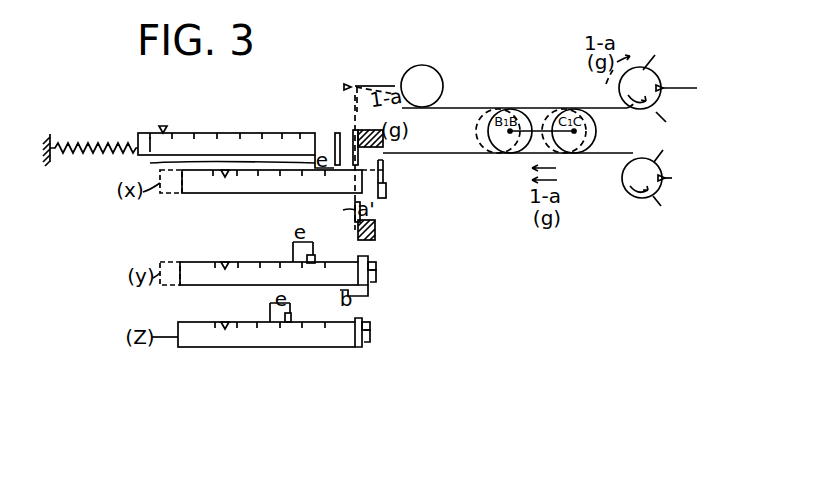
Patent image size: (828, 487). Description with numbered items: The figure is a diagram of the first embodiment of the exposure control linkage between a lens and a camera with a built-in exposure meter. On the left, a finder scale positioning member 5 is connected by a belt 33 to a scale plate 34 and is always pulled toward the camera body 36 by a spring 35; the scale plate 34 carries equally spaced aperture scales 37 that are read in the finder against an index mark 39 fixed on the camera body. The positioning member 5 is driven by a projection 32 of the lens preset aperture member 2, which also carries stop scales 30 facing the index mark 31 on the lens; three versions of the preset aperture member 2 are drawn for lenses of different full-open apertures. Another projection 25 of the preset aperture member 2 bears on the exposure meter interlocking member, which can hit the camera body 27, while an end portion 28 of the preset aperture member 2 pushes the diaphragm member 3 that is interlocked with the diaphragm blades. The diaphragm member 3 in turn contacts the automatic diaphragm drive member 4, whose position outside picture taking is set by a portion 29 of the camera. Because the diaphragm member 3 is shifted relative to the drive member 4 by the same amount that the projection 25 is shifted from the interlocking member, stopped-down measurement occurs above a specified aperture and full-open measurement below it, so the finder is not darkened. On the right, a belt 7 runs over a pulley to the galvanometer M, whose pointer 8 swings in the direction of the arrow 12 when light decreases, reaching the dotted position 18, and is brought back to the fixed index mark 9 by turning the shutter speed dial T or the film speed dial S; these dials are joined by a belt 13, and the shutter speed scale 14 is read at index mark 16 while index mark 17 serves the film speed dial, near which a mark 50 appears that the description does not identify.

The lens preset aperture member 2 is at (332, 196).
The diaphragm member 3 is at (385, 200).
The automatic diaphragm drive member 4 is at (339, 212).
The finder scale positioning member 5 is at (349, 132).
The belt 7 is at (459, 108).
The pointer 8 is at (395, 86).
The fixed index mark 9 is at (348, 84).
The arrow 12 is at (374, 86).
The belt 13 is at (612, 108).
The shutter speed scale 14 is at (643, 46).
The index mark 16 is at (659, 80).
The index mark 17 is at (664, 172).
The dotted line 18 is at (405, 102).
The projection 25 is at (386, 186).
The camera body 27 is at (385, 141).
The end portion 28 is at (386, 196).
The portion of the camera 29 is at (376, 235).
The stop scales 30 is at (216, 193).
The index mark 31 is at (222, 318).
The projection 32 is at (336, 150).
The belt 33 is at (326, 160).
The scale plate 34 is at (211, 133).
The spring 35 is at (90, 145).
The camera body 36 is at (50, 134).
The equally spaced aperture scales 37 is at (148, 144).
The index mark 39 is at (163, 126).
The scale mark 50 is at (663, 220).